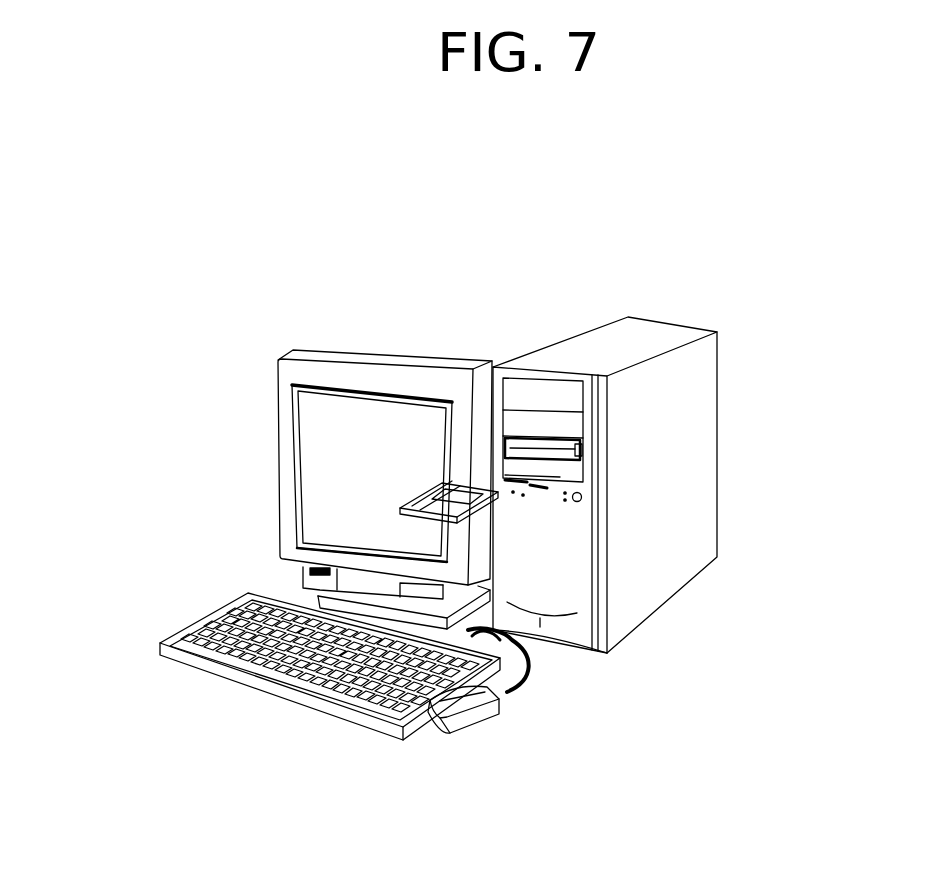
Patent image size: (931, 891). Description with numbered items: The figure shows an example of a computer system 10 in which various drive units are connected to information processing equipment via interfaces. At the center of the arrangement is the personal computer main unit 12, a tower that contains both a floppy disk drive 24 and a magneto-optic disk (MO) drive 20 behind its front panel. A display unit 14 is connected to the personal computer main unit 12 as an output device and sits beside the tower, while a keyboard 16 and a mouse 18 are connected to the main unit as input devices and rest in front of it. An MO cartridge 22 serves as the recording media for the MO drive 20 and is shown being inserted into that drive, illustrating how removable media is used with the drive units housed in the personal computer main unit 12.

The computer system 10 is at (278, 327).
The personal computer main unit 12 is at (648, 333).
The display unit 14 is at (393, 380).
The keyboard 16 is at (295, 690).
The mouse 18 is at (452, 727).
The magneto-optic disk (MO) drive 20 is at (580, 457).
The MO cartridge 22 is at (417, 497).
The floppy disk drive 24 is at (530, 500).